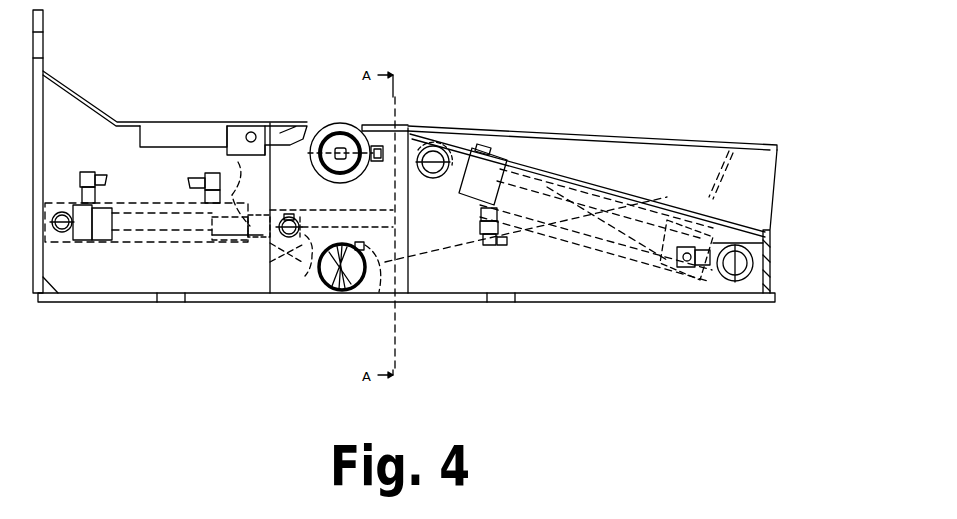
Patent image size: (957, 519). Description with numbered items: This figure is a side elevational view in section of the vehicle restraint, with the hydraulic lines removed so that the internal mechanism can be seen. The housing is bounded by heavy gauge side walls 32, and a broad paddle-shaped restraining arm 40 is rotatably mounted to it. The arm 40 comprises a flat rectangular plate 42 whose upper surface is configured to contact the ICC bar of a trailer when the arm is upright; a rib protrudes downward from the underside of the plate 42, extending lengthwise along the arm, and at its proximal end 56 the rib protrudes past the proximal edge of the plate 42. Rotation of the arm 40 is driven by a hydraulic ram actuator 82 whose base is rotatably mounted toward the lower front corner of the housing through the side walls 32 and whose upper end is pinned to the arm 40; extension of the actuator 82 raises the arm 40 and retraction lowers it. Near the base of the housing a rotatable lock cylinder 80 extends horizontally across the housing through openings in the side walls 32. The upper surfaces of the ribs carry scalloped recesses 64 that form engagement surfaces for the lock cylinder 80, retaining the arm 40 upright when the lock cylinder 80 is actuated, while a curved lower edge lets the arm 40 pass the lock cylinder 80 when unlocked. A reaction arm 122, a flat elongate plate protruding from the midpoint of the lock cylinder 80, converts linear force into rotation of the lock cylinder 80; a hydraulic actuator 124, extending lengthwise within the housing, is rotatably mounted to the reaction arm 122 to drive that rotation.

The side walls 32 is at (68, 125).
The scalloped recesses 64 is at (247, 190).
The proximal ends 56 is at (258, 175).
The restraining arm 40 is at (511, 130).
The flat rectangular plate 42 is at (637, 128).
The arm rotator or actuator 82 is at (623, 237).
The reaction arm 122 is at (313, 268).
The hydraulic actuator 124 is at (137, 227).
The lock cylinder 80 is at (313, 268).